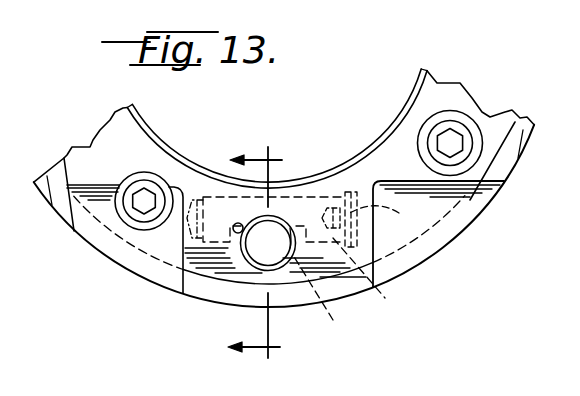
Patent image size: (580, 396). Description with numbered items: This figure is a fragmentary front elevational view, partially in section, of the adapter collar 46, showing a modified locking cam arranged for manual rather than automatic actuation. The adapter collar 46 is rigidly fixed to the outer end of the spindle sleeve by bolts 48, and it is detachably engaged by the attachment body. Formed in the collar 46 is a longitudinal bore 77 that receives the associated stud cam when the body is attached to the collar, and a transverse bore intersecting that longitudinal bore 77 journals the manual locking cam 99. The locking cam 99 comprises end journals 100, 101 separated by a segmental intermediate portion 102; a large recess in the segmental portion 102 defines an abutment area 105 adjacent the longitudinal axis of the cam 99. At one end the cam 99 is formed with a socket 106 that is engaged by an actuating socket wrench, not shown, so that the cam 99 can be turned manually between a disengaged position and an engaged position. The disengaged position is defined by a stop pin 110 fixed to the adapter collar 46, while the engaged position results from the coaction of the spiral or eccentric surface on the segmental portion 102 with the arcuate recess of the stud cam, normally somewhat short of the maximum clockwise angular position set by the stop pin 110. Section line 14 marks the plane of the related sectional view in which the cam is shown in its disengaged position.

The section line 14 is at (273, 255).
The adapter collar 46 is at (93, 249).
The bolts 48 is at (133, 173).
The longitudinal bore 77 is at (268, 262).
The manual locking cam 99 is at (333, 196).
The end journal 100 is at (384, 297).
The end journal 101 is at (222, 244).
The segmental intermediate portion 102 is at (257, 197).
The abutment area 105 is at (335, 294).
The socket 106 is at (395, 214).
The stop pin 110 is at (237, 224).